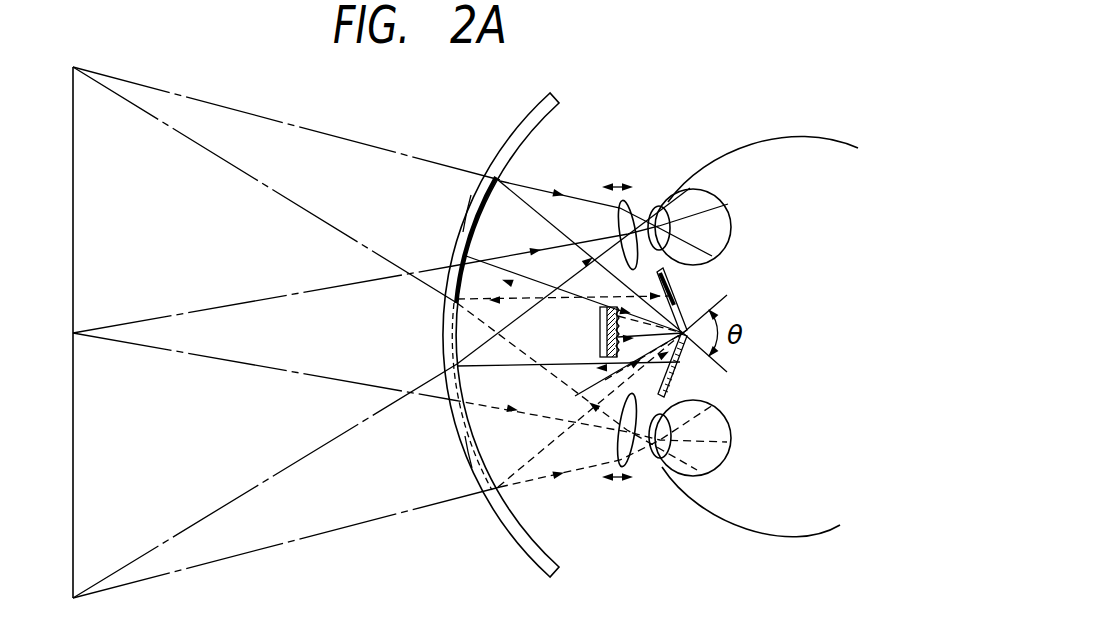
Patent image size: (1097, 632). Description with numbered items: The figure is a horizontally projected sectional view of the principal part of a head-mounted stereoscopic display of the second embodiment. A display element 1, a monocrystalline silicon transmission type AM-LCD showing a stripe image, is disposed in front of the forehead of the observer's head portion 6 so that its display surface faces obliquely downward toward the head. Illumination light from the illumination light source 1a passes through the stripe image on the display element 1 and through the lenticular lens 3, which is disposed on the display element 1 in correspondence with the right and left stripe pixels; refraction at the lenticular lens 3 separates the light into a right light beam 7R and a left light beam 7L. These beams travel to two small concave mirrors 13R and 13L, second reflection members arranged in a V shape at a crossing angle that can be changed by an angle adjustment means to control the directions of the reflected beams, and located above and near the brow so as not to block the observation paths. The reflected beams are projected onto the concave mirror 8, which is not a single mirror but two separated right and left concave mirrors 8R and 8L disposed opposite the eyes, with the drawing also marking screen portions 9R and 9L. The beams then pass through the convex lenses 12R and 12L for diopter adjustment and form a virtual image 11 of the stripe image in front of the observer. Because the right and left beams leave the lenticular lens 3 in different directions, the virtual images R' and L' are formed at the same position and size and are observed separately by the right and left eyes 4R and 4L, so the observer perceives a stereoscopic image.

The display element 1 is at (612, 306).
The illumination light source 1a is at (600, 331).
The lenticular lens 3 is at (615, 369).
The right eye 4R is at (730, 207).
The left eye 4L is at (731, 440).
The head portion 6 is at (814, 136).
The right light beam 7R is at (592, 238).
The left light beam 7L is at (593, 417).
The concave mirror 8 is at (517, 548).
The right concave mirror 8R is at (499, 190).
The left concave mirror 8L is at (470, 443).
The right Fresnel lens portion 9R is at (485, 212).
The left Fresnel lens portion 9L is at (462, 445).
The virtual image 11 is at (73, 430).
The right convex lens 12R is at (632, 200).
The left convex lens 12L is at (633, 458).
The left concave mirror (second reflection member) 13L is at (680, 276).
The right concave mirror (second reflection member) 13R is at (668, 397).